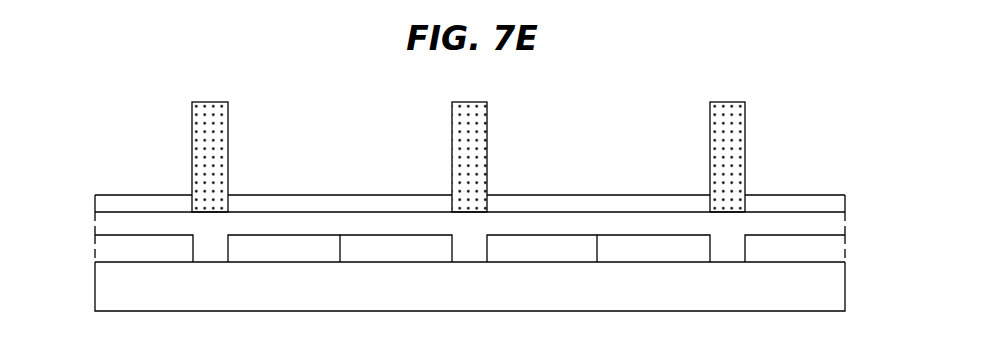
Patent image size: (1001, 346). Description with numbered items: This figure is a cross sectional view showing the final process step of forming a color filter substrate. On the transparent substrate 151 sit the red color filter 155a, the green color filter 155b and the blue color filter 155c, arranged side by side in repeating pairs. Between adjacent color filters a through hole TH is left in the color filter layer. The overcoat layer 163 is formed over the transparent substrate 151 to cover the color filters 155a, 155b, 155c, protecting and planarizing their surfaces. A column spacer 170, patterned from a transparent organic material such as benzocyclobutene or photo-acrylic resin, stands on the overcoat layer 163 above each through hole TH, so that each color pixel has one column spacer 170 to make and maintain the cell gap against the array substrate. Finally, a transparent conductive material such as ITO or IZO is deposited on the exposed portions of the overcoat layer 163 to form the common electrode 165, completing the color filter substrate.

The transparent substrate 151 is at (498, 301).
The red color filter 155a is at (142, 240).
The green color filter 155b is at (420, 243).
The blue color filter 155c is at (667, 242).
The overcoat layer 163 is at (358, 227).
The common electrode 165 is at (108, 202).
The column spacer 170 is at (212, 132).
The through hole TH is at (222, 237).